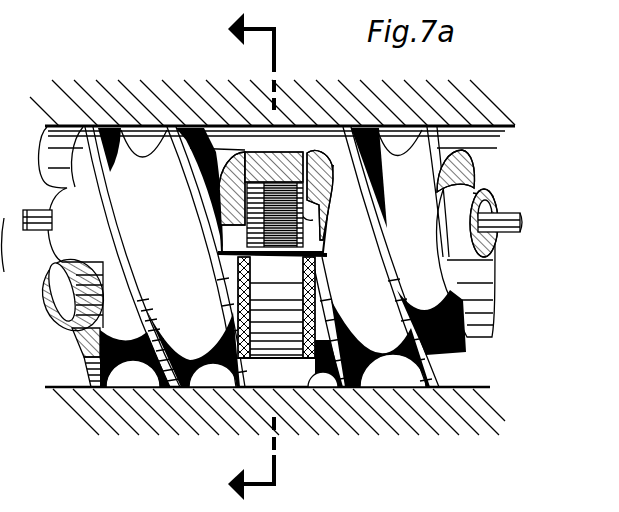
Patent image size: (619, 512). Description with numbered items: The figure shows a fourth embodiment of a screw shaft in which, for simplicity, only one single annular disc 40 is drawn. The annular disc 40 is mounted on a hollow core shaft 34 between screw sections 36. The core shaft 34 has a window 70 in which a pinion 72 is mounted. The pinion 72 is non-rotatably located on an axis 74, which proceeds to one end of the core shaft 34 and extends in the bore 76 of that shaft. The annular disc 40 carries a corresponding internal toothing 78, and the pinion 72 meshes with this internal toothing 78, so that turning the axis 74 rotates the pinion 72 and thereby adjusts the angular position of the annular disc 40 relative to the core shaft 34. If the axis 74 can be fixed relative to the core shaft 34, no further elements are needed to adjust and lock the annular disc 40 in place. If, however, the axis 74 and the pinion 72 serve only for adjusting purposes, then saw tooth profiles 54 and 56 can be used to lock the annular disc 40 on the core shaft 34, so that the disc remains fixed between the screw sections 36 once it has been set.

The hollow core shaft 34 is at (58, 188).
The screw sections 36 is at (143, 165).
The internal toothing 78 is at (277, 180).
The bore 76 is at (325, 238).
The axis 74 is at (493, 172).
The pinion 72 is at (262, 210).
The window 70 is at (222, 250).
The annular disc 40 is at (270, 360).
The saw tooth profile 56 is at (297, 360).
The saw tooth profile 54 is at (313, 360).